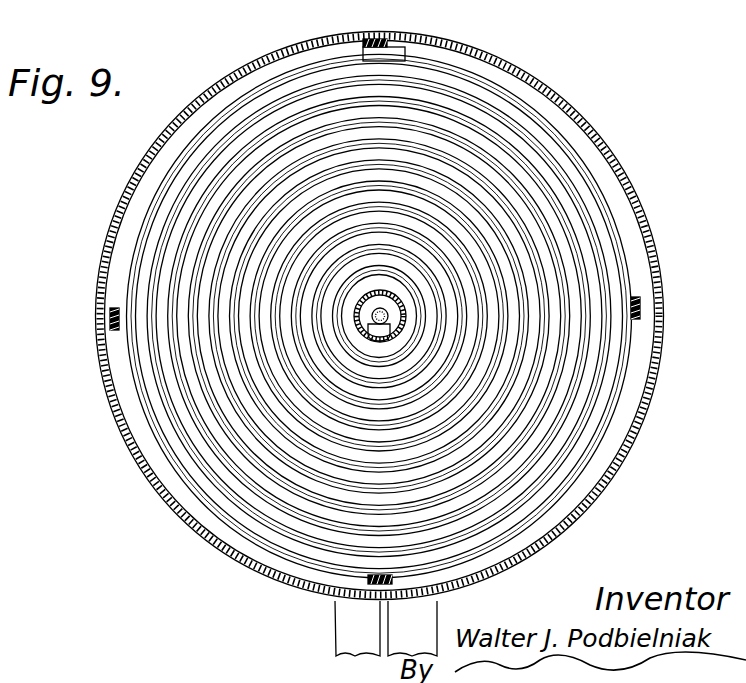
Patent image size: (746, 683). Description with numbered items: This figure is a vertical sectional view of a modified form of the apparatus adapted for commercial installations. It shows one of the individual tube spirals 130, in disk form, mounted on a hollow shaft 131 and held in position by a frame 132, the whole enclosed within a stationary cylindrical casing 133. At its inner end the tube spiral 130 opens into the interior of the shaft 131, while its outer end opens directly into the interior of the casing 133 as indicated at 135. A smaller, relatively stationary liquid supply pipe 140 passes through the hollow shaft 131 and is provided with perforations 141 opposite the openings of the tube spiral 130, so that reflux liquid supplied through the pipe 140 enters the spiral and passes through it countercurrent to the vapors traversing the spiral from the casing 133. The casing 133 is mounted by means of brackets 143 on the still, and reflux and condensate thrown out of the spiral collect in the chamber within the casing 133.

The tube spiral 130 is at (166, 233).
The hollow shaft 131 is at (390, 317).
The frame 132 is at (375, 39).
The stationary cylindrical casing 133 is at (637, 198).
The outer end opening of tube spiral 135 is at (405, 56).
The liquid supply pipe 140 is at (380, 311).
The perforations 141 is at (382, 342).
The brackets 143 is at (356, 634).